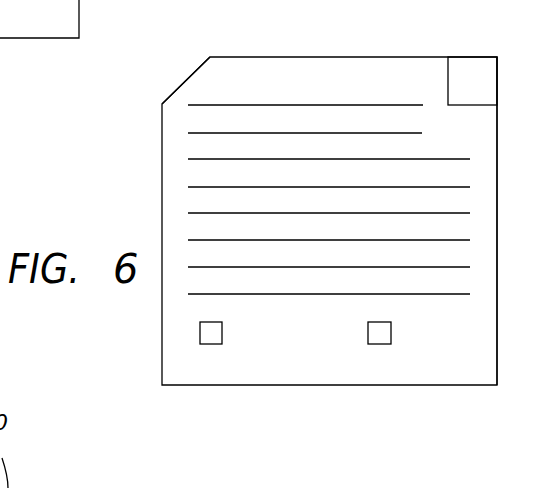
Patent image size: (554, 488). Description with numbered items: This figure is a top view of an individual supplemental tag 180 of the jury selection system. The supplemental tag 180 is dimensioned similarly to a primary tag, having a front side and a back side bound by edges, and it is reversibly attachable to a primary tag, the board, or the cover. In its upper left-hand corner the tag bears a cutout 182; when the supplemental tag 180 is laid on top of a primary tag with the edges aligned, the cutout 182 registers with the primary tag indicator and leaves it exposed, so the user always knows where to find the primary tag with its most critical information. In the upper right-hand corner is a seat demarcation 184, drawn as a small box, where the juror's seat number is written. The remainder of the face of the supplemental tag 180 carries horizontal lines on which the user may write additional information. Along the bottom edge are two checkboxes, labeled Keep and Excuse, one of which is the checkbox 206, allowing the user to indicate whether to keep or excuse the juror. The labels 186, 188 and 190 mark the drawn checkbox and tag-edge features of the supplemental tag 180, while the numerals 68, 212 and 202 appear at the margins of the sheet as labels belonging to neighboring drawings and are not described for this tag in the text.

The supplemental tag 180 is at (312, 358).
The cutout 182 is at (185, 81).
The seat demarcation 184 is at (473, 80).
The Keep checkbox 186 is at (210, 335).
The Excuse checkbox 188 is at (381, 334).
The document edge 190 is at (485, 190).
The adjacent figure element 68 is at (39, 38).
The adjacent figure element 212 is at (88, 487).
The adjacent figure element 202 is at (30, 487).
The checkbox 206 is at (125, 487).